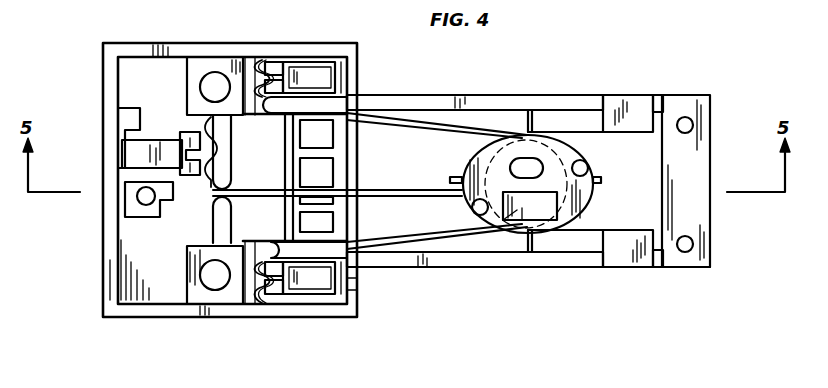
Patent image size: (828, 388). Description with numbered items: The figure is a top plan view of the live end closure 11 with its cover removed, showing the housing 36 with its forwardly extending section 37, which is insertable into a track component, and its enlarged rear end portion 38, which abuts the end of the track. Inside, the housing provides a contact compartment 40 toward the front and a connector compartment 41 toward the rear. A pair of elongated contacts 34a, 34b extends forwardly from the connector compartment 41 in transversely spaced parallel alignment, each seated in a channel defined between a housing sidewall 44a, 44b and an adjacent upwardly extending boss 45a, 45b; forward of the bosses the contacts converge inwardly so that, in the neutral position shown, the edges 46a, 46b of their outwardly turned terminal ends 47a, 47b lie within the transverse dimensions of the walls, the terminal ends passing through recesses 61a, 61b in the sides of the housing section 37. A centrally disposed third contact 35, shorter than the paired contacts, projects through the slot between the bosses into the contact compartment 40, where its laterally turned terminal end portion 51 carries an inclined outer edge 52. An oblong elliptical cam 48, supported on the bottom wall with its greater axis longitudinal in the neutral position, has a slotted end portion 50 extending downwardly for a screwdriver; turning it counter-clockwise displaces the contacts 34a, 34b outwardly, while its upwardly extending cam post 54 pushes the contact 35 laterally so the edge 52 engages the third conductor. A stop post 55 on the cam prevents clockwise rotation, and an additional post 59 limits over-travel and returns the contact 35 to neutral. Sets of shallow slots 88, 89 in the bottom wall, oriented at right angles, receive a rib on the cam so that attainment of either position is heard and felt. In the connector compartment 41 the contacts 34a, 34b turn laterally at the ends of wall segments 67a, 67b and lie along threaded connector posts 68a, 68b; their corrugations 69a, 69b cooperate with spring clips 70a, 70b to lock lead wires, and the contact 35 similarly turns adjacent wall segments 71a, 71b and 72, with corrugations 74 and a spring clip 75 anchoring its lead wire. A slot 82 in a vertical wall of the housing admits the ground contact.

The live end closure 11 is at (110, 325).
The contact 34a is at (438, 245).
The contact 34b is at (433, 122).
The third contact 35 is at (388, 192).
The housing 36 is at (172, 316).
The forwardly extending section 37 is at (703, 270).
The rear end portion 38 is at (218, 309).
The contact compartment 40 is at (649, 217).
The connector compartment 41 is at (140, 271).
The housing sidewall 44a is at (578, 265).
The housing sidewall 44b is at (566, 100).
The boss 45a is at (333, 216).
The boss 45b is at (333, 152).
The edge 46a is at (628, 268).
The edge 46b is at (630, 98).
The terminal end 47a is at (624, 256).
The terminal end 47b is at (640, 102).
The cam 48 is at (585, 205).
The end portion 50 is at (460, 163).
The terminal end portion 51 is at (505, 222).
The inclined edge 52 is at (521, 222).
The cam post 54 is at (509, 163).
The stop post 55 is at (580, 166).
The post 59 is at (477, 207).
The recess 61a is at (654, 269).
The recess 61b is at (660, 105).
The wall segment 67a is at (280, 248).
The wall segment 67b is at (292, 108).
The connector post 68a is at (228, 297).
The connector post 68b is at (205, 63).
The corrugations 69a is at (264, 290).
The corrugations 69b is at (271, 58).
The spring clip 70a is at (325, 285).
The spring clip 70b is at (305, 68).
The wall segment 71a is at (217, 221).
The wall segment 71b is at (229, 172).
The wall segment 72 is at (173, 217).
The corrugations 74 is at (208, 125).
The spring clip 75 is at (135, 153).
The slot 82 is at (353, 284).
The slots 88 is at (600, 178).
The slots 89 is at (533, 110).